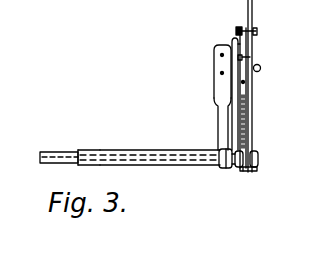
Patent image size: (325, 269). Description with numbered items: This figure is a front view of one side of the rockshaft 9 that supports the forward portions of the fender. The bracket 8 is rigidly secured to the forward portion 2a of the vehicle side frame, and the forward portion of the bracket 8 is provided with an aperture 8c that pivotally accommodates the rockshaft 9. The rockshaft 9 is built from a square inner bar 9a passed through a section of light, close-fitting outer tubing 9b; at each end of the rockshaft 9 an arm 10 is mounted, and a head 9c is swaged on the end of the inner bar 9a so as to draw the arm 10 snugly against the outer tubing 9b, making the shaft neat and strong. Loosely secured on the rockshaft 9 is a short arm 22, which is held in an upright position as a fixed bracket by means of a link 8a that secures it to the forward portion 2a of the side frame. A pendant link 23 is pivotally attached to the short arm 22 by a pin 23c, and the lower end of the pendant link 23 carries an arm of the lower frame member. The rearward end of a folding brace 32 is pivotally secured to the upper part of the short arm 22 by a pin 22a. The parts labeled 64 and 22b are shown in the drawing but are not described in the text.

The arm 10 is at (253, 28).
The folding brace 32 is at (236, 31).
The pin 22a is at (257, 33).
The pendant link 23 is at (233, 44).
The pin 23c is at (250, 57).
The hook 64 is at (261, 69).
The forward portion of side frame 2a is at (214, 71).
The bracket 8 is at (218, 117).
The link 8a is at (246, 84).
The short arm 22 is at (248, 108).
The rockshaft 9 is at (156, 169).
The square inner bar 9a is at (60, 152).
The outer tubing 9b is at (75, 152).
The head 9c is at (259, 160).
The lower bracket arm 22b is at (253, 170).
The aperture 8c is at (223, 172).